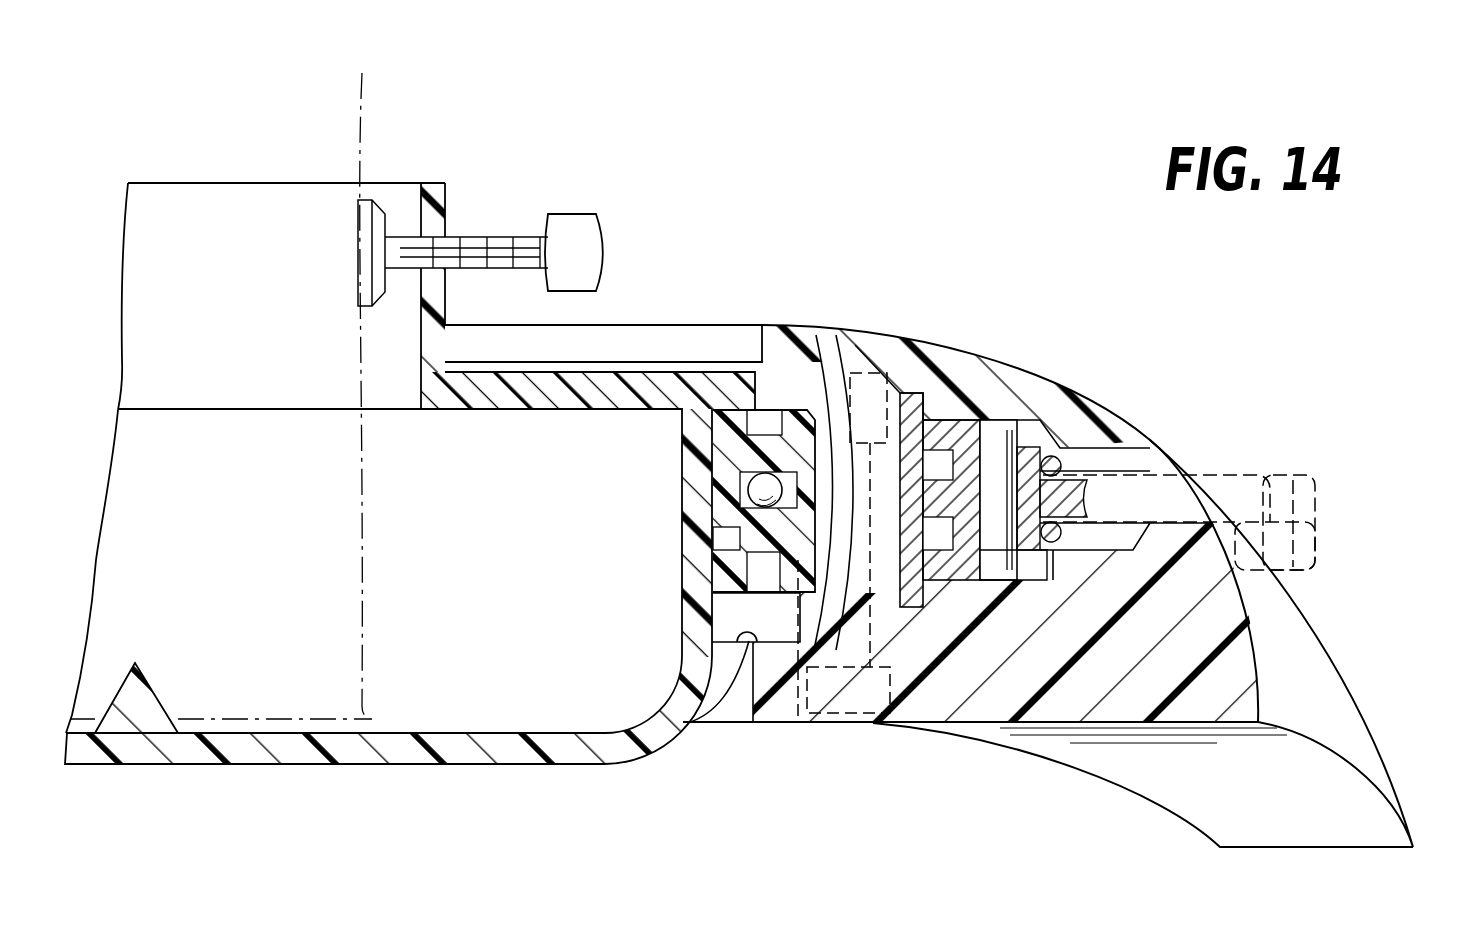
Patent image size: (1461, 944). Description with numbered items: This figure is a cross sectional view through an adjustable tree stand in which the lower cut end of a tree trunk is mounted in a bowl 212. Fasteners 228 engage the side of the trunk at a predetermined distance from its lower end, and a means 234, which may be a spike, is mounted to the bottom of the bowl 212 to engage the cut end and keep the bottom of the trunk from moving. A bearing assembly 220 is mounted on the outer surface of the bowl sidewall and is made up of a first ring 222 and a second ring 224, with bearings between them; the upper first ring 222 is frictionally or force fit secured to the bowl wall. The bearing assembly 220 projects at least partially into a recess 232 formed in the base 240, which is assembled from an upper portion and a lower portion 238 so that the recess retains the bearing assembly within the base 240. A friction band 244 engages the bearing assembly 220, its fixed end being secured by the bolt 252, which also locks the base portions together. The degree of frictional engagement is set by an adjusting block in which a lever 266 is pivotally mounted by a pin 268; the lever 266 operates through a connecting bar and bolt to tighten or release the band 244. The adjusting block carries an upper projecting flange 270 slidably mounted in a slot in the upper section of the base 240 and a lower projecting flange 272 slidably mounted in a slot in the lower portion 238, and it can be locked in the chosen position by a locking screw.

The bowl 212 is at (510, 768).
The bearing assembly 220 is at (788, 408).
The first ring 222 is at (812, 405).
The second ring 224 is at (747, 647).
The fasteners 228 is at (606, 222).
The recess 232 is at (728, 683).
The means for engaging the cut end of the tree trunk 234 is at (157, 702).
The lower portion of base 238 is at (1355, 680).
The base 240 is at (1128, 426).
The friction band 244 is at (838, 363).
The bolt 252 is at (855, 722).
The lever 266 is at (1278, 473).
The pin 268 is at (1005, 430).
The upper projecting flange 270 is at (912, 398).
The lower projecting flange 272 is at (925, 598).